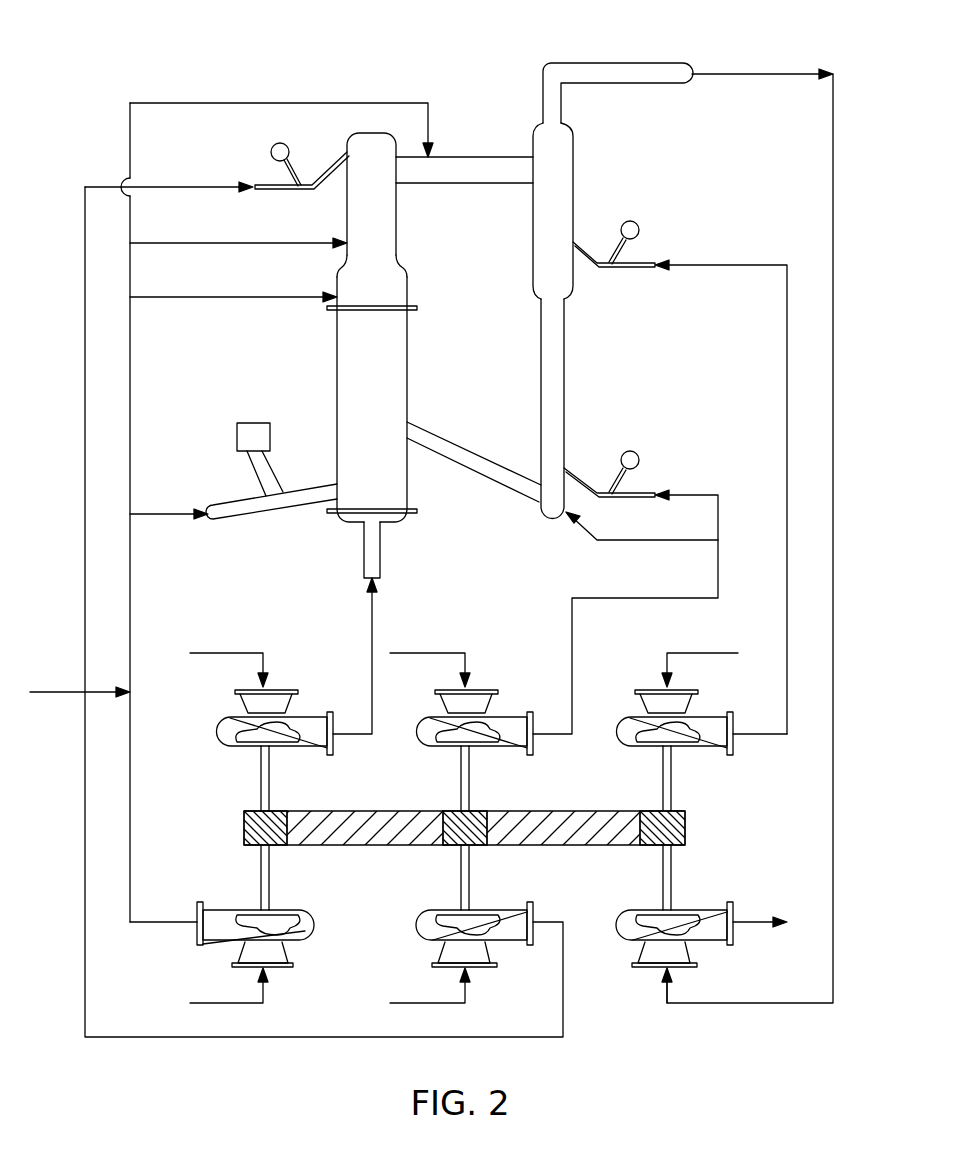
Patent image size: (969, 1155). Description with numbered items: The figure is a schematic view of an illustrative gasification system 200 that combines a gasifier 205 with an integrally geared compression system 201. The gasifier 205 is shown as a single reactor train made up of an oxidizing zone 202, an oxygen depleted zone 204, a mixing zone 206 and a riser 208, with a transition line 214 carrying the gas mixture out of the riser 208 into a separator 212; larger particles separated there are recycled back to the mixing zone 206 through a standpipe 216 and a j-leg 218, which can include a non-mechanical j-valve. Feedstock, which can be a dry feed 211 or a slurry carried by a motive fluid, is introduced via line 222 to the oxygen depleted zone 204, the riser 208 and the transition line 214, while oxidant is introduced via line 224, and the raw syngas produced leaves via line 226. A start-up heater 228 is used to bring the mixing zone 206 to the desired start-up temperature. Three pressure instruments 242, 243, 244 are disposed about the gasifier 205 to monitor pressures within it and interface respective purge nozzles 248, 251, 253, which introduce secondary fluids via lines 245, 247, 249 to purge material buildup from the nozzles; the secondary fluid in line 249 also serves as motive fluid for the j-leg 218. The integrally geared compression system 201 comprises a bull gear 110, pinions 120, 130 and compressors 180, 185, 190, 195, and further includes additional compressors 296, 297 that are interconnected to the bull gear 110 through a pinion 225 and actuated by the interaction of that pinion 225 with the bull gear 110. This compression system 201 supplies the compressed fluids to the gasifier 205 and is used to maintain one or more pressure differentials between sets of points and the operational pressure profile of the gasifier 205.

The gasification system 200 is at (196, 40).
The integrally geared compression system 201 is at (232, 852).
The oxidizing zone 202 is at (335, 522).
The oxygen depleted zone 204 is at (408, 268).
The gasifier 205 is at (483, 108).
The mixing zone 206 is at (408, 350).
The riser 208 is at (398, 222).
The dry feed 211 is at (80, 661).
The separator 212 is at (578, 150).
The transition line 214 is at (497, 185).
The standpipe 216 is at (566, 350).
The j-leg 218 is at (472, 450).
The feedstock line 222 is at (330, 100).
The oxidant line 224 is at (372, 605).
The pinion 225 is at (480, 810).
The raw syngas line 226 is at (770, 72).
The start-up heater 228 is at (250, 420).
The pressure instrument 242 is at (268, 150).
The pressure instrument 243 is at (640, 222).
The pressure instrument 244 is at (628, 445).
The secondary fluid line 245 is at (165, 180).
The secondary fluid line 247 is at (752, 262).
The purge nozzle 248 is at (282, 192).
The secondary fluid line 249 is at (640, 598).
The purge nozzle 251 is at (636, 272).
The purge nozzle 253 is at (628, 500).
The bull gear 110 is at (570, 845).
The pinion 120 is at (686, 822).
The pinion 130 is at (242, 825).
The compressor 180 is at (617, 730).
The compressor 185 is at (613, 928).
The compressor 190 is at (218, 730).
The compressor 195 is at (313, 925).
The additional compressor 296 is at (418, 730).
The additional compressor 297 is at (413, 922).